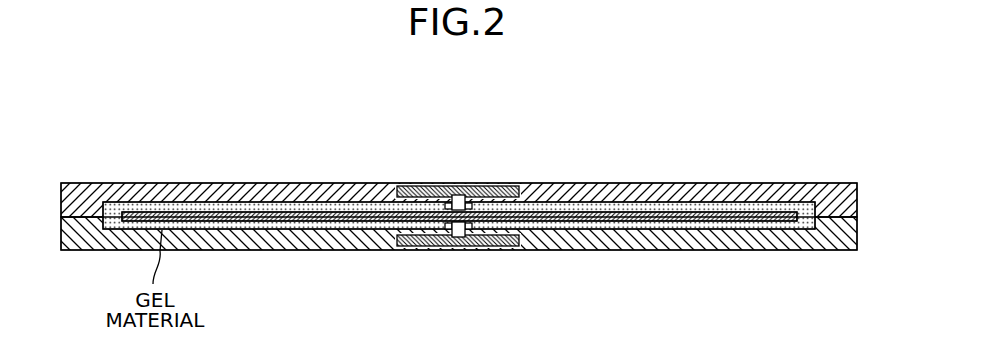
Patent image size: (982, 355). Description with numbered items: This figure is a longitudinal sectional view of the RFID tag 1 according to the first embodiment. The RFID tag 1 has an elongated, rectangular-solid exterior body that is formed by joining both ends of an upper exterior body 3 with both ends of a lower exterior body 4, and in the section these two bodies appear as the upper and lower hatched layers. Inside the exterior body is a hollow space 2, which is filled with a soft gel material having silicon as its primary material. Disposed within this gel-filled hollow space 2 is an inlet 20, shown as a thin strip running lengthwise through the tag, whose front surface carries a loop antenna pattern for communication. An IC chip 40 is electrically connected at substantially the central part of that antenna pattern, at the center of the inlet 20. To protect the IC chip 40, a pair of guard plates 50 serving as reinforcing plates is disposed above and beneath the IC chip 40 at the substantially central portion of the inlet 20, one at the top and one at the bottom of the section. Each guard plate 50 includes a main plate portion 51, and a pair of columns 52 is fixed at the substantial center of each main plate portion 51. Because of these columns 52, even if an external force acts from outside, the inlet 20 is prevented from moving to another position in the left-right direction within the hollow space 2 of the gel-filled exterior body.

The RFID tag 1 is at (680, 182).
The hollow space 2 is at (112, 201).
The upper exterior body 3 is at (85, 182).
The lower exterior body 4 is at (85, 251).
The inlet 20 is at (159, 209).
The IC chip 40 is at (469, 198).
The guard plate 50 is at (450, 219).
The main plate portion 51 is at (430, 186).
The column 52 is at (463, 194).